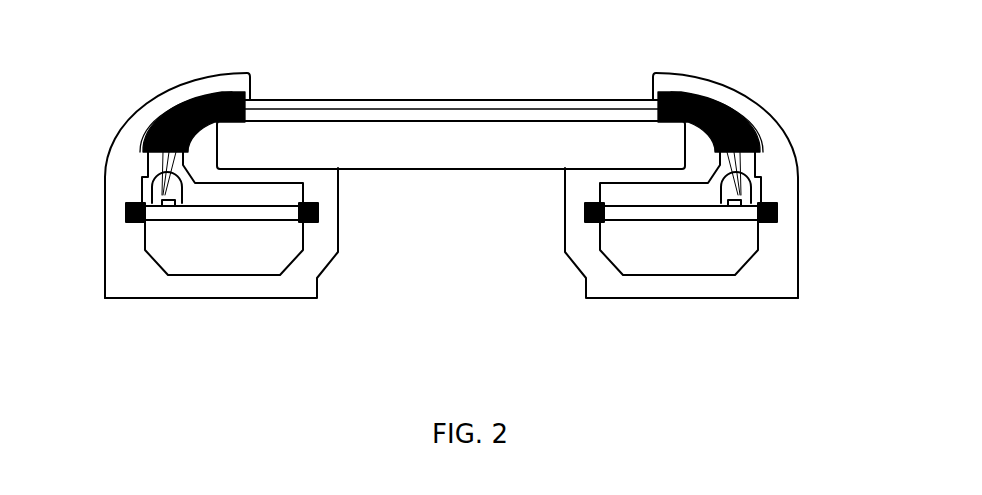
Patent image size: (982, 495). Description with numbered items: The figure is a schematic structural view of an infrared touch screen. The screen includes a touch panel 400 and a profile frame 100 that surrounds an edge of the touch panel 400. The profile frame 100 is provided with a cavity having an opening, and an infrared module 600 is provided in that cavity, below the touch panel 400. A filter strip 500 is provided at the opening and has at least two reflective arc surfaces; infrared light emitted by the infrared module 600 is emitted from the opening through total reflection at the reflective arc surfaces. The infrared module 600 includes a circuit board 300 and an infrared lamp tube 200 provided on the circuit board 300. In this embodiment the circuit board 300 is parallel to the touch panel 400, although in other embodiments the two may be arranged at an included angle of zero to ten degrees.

The profile frame 100 is at (145, 272).
The light emitting element 200 is at (172, 192).
The circuit board 300 is at (252, 215).
The touch panel 400 is at (457, 147).
The filter strip 500 is at (225, 92).
The infrared module 600 is at (328, 350).